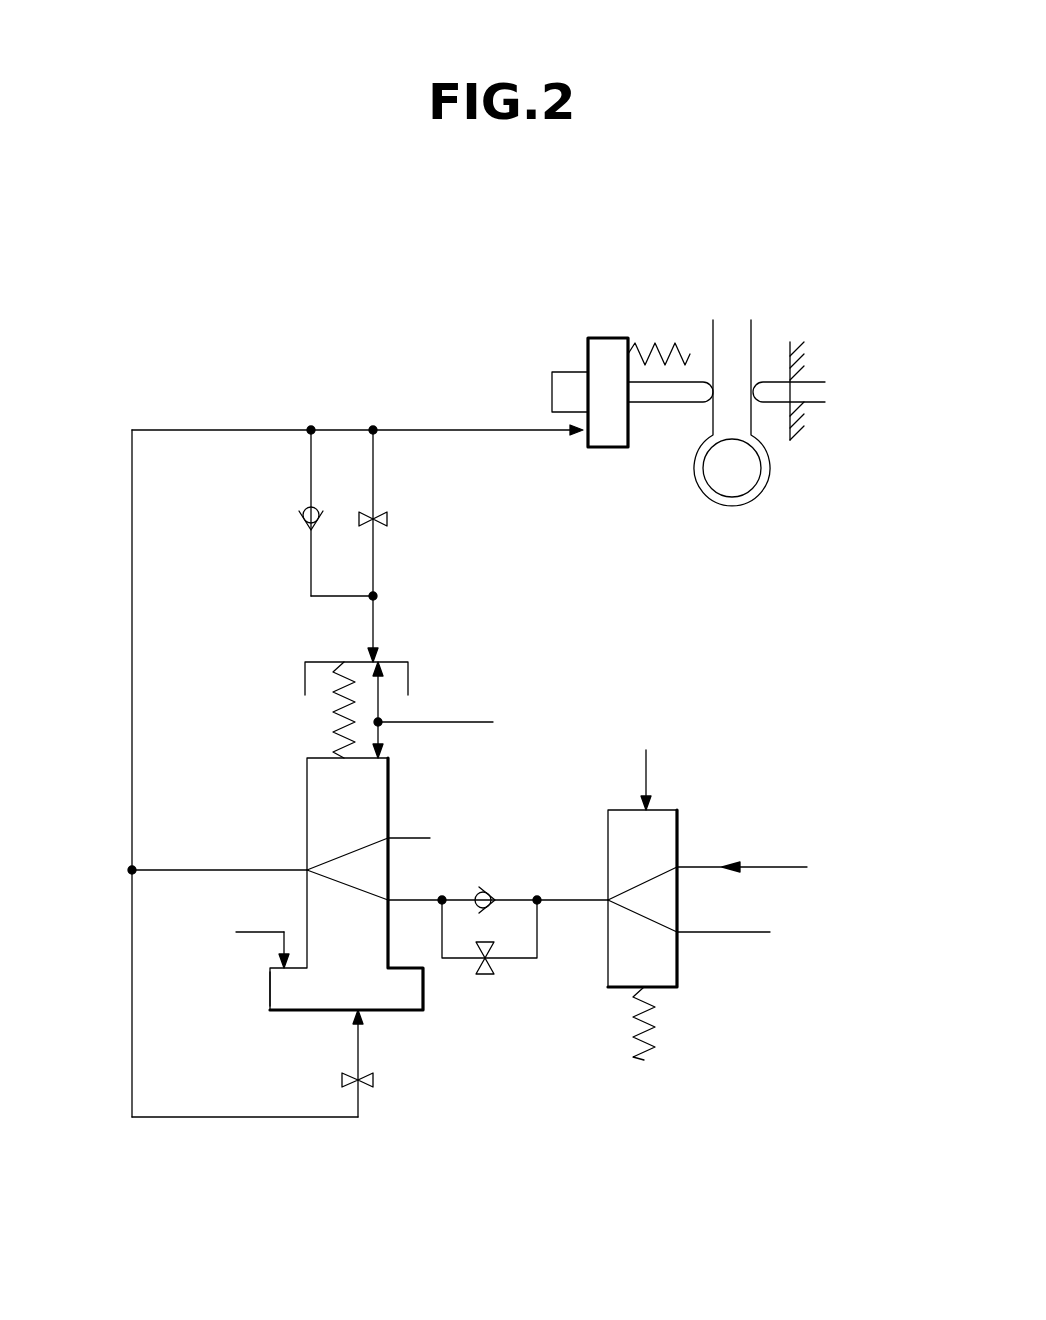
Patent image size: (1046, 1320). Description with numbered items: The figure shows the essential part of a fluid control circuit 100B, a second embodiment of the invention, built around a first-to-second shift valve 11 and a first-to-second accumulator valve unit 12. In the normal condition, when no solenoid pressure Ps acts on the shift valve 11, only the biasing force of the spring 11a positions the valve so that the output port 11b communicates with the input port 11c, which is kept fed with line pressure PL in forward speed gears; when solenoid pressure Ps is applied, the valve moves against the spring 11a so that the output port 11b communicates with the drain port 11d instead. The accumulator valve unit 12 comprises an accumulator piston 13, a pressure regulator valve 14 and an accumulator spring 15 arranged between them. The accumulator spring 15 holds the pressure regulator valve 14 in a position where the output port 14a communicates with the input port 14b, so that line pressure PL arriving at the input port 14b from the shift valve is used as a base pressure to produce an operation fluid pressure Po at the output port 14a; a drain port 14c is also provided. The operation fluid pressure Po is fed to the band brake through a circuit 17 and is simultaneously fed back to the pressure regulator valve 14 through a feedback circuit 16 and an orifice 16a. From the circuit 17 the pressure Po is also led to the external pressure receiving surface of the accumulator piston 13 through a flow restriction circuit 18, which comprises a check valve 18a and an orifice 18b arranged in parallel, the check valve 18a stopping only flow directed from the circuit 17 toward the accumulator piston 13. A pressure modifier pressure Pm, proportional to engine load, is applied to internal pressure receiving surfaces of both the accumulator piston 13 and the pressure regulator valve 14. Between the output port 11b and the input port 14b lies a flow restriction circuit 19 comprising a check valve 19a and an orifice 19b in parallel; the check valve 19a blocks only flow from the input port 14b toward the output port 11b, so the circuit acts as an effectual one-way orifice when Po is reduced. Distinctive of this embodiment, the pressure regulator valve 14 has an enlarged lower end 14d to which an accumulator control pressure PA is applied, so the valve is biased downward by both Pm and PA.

The fluid control circuit 100B is at (622, 212).
The 1–2 shift valve 11 is at (675, 898).
The spring 11a is at (650, 1035).
The output port 11b is at (608, 900).
The input port 11c is at (677, 867).
The drain port 11d is at (677, 930).
The 1–2 accumulator valve unit 12 is at (234, 1022).
The accumulator piston 13 is at (308, 648).
The pressure regulator valve 14 is at (370, 884).
The output port 14a is at (307, 870).
The input port 14b is at (388, 900).
The drain port 14c is at (388, 838).
The enlarged lower end 14d is at (270, 982).
The accumulator spring 15 is at (333, 697).
The feedback circuit 16 is at (327, 1117).
The orifice 16a is at (373, 1080).
The circuit 17 is at (150, 648).
The flow restriction circuit 18 is at (421, 546).
The check valve 18a is at (318, 509).
The orifice 18b is at (380, 510).
The flow restriction circuit 19 is at (526, 986).
The check valve 19a is at (488, 908).
The orifice 19b is at (488, 975).